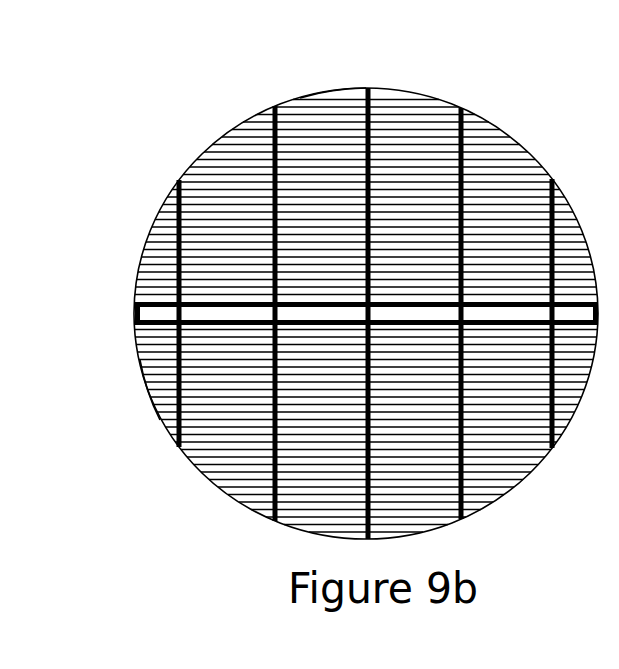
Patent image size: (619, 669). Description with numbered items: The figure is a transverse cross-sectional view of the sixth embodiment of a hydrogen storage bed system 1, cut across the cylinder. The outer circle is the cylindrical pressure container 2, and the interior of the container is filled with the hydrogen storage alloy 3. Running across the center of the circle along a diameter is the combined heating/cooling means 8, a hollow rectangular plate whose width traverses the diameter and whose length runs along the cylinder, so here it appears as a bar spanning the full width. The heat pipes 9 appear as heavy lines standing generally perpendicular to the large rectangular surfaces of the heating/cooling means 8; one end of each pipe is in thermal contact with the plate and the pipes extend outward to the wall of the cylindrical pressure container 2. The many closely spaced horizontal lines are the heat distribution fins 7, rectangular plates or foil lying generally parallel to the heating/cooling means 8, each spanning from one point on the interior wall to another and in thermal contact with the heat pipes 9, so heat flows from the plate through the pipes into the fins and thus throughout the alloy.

The hydrogen storage bed system 1 is at (437, 84).
The cylindrical pressure container 2 is at (332, 90).
The hydrogen storage alloy 3 is at (237, 146).
The heat distribution fins 7 is at (148, 393).
The combined heating/cooling means 8 is at (135, 308).
The heat pipes 9 is at (368, 88).